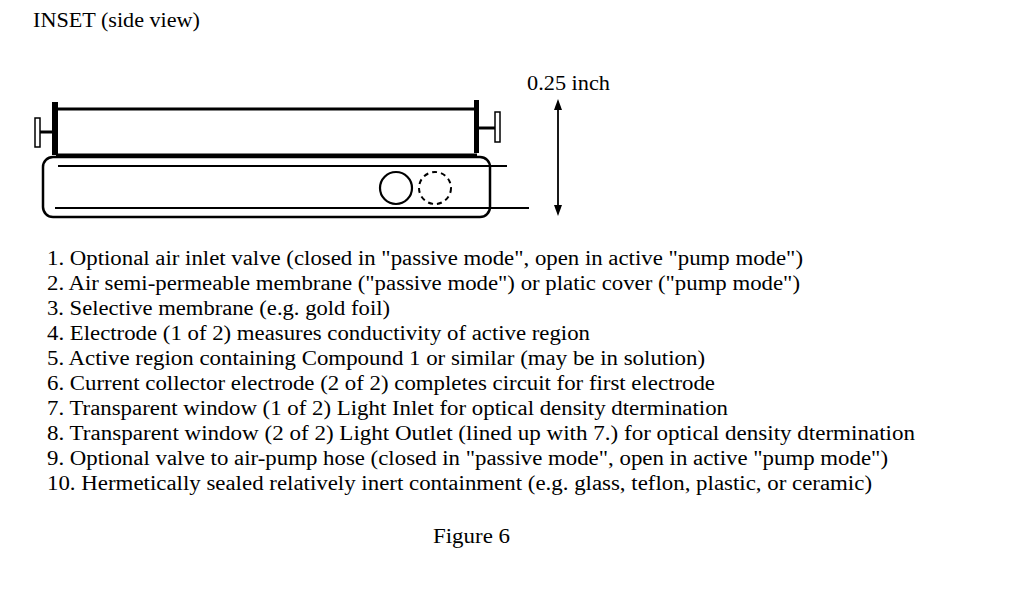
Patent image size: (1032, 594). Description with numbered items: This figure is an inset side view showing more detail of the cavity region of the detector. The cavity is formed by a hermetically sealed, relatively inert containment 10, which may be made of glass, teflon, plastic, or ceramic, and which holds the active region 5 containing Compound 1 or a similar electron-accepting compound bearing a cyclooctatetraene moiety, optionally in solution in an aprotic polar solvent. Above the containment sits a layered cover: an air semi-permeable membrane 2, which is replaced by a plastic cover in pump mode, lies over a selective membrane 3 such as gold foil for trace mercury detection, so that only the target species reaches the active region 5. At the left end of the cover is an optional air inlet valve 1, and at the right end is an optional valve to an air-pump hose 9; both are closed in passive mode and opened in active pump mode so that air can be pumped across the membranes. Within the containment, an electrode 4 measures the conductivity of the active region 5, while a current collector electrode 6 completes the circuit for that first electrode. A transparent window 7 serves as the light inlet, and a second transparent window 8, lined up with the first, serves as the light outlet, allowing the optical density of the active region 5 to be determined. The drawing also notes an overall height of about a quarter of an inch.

The optional air inlet valve 1 is at (43, 102).
The air semi-permeable membrane 2 is at (126, 102).
The selective membrane 3 is at (182, 148).
The electrode 4 is at (240, 159).
The active region 5 is at (299, 180).
The current collector electrode 6 is at (355, 200).
The transparent window 7 is at (393, 164).
The transparent window 8 is at (435, 180).
The optional valve to air-pump hose 9 is at (490, 105).
The hermetically sealed containment 10 is at (500, 183).